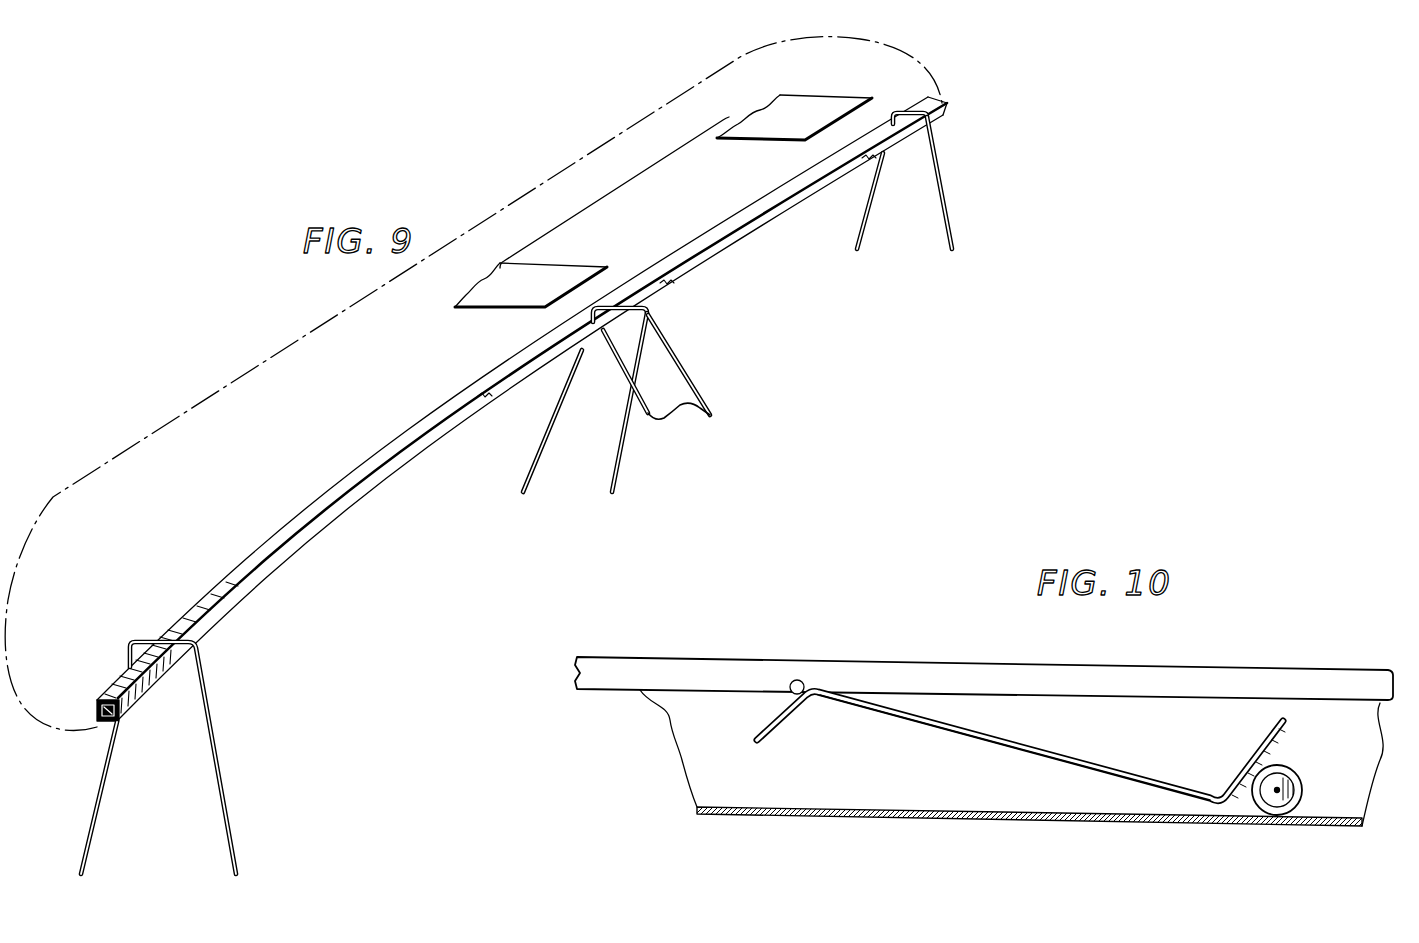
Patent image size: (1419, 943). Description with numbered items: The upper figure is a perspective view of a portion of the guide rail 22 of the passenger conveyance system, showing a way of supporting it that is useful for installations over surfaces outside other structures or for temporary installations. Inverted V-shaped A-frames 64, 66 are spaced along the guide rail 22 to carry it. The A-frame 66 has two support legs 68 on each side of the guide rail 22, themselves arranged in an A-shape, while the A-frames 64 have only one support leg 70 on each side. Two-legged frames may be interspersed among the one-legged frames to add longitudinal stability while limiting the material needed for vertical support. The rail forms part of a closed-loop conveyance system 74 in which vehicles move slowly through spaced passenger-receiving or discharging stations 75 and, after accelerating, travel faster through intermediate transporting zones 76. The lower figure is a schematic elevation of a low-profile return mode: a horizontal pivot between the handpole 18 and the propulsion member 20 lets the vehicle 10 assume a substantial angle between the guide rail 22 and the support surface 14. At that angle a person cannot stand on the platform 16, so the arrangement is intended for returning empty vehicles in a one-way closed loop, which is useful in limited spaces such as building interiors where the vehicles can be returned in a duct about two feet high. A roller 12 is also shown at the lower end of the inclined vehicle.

In FIG. 10, the vehicle 10 is at (1021, 745).
In FIG. 10, the roller 12 is at (1290, 763).
In FIG. 10, the support surface 14 is at (1010, 787).
In FIG. 10, the platform 16 is at (1257, 742).
In FIG. 10, the handpole 18 is at (898, 723).
In FIG. 10, the propulsion member 20 is at (790, 684).
In FIG. 9, the guide rail 22 is at (327, 493).
In FIG. 10, the guide rail 22 is at (932, 662).
In FIG. 9, the A-frame 64 is at (938, 167).
In FIG. 9, the A-frame 66 is at (692, 382).
In FIG. 9, the support legs 68 is at (542, 448).
In FIG. 9, the support leg 70 is at (947, 238).
In FIG. 9, the closed-loop conveyance system 74 is at (165, 424).
In FIG. 9, the passenger-receiving or discharging stations 75 is at (752, 137).
In FIG. 9, the intermediate transporting zones 76 is at (617, 186).